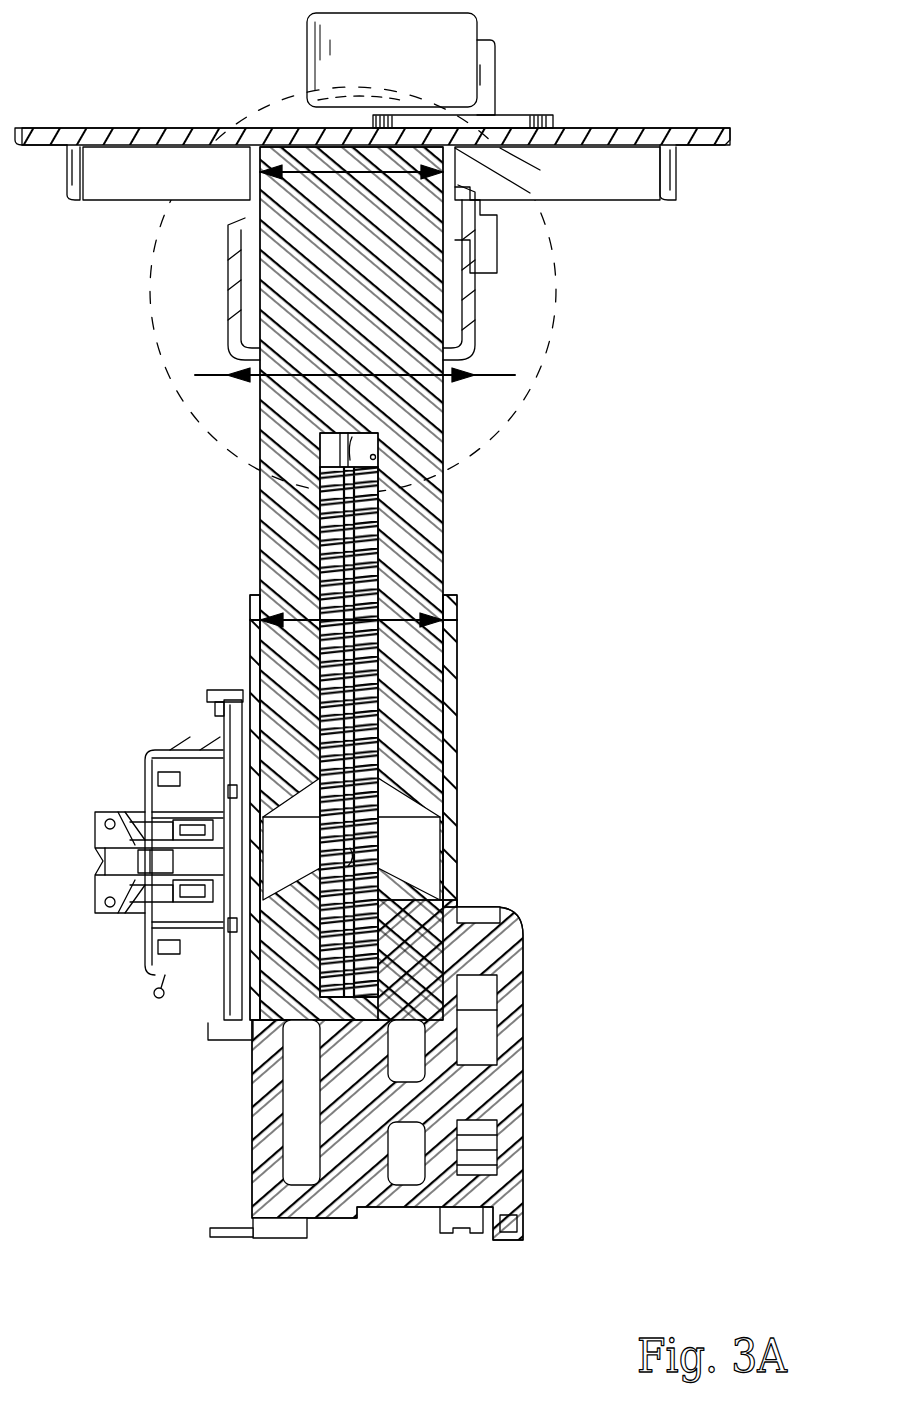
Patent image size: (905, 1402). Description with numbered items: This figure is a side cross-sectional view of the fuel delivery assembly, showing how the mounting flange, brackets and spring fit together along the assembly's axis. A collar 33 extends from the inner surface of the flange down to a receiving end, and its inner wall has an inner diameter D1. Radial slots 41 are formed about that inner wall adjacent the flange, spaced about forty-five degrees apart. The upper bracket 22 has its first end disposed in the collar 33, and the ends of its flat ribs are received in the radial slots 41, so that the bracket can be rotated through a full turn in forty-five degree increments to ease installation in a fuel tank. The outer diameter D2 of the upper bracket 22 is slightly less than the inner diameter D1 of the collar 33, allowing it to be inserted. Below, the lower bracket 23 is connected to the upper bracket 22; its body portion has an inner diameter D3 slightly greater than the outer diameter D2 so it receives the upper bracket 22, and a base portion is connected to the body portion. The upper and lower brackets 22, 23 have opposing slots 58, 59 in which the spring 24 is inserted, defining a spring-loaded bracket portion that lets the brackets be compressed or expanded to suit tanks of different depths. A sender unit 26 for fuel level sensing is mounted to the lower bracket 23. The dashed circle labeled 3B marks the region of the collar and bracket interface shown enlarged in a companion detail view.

The upper bracket 22 is at (260, 492).
The lower bracket 23 is at (250, 613).
The spring 24 is at (300, 540).
The sender unit 26 is at (98, 835).
The collar 33 is at (250, 183).
The radial slots 41 is at (357, 157).
The opposing slot of upper bracket 58 is at (352, 460).
The opposing slot of lower bracket 59 is at (380, 838).
The inner diameter of collar D1 is at (300, 130).
The outer diameter of upper bracket D2 is at (505, 372).
The inner diameter of body portion D3 is at (400, 617).
The detail view 3B boundary 3B is at (480, 436).